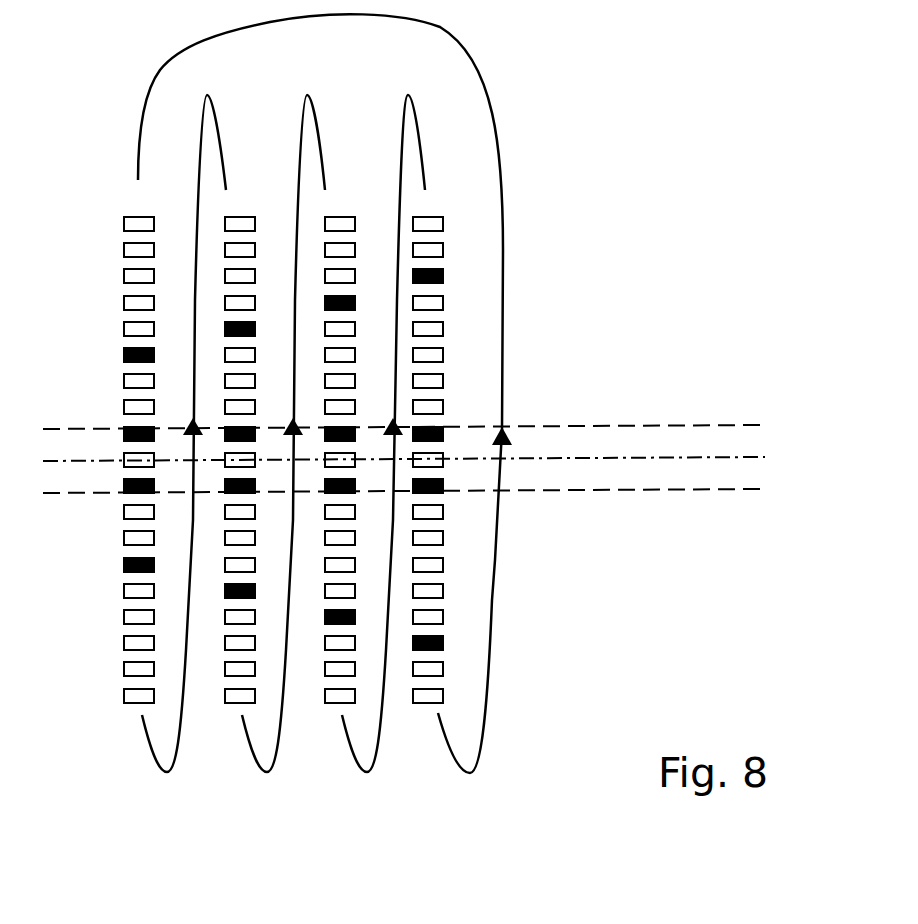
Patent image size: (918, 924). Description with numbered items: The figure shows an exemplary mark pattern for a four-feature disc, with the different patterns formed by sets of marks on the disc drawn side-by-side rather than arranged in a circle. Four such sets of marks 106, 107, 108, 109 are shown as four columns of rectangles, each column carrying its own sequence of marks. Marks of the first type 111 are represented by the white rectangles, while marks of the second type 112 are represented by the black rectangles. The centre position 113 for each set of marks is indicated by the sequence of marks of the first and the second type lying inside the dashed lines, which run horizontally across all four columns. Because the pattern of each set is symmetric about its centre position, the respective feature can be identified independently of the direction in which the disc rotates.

The first storage column / register chain 106 is at (169, 459).
The second storage column / register chain 107 is at (274, 459).
The third storage column / register chain 108 is at (375, 459).
The fourth storage column / register chain 109 is at (325, 415).
The marks of the first type 111 is at (452, 352).
The marks of the second type 112 is at (450, 270).
The centre position 113 is at (440, 459).